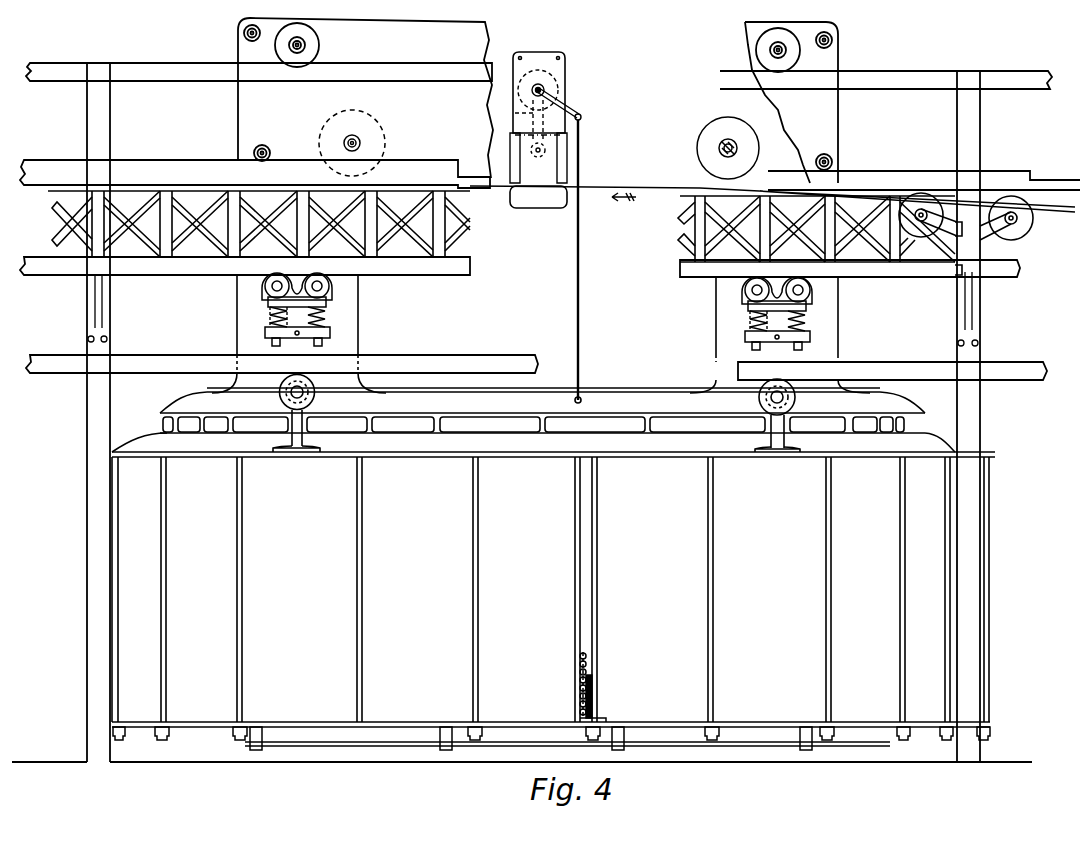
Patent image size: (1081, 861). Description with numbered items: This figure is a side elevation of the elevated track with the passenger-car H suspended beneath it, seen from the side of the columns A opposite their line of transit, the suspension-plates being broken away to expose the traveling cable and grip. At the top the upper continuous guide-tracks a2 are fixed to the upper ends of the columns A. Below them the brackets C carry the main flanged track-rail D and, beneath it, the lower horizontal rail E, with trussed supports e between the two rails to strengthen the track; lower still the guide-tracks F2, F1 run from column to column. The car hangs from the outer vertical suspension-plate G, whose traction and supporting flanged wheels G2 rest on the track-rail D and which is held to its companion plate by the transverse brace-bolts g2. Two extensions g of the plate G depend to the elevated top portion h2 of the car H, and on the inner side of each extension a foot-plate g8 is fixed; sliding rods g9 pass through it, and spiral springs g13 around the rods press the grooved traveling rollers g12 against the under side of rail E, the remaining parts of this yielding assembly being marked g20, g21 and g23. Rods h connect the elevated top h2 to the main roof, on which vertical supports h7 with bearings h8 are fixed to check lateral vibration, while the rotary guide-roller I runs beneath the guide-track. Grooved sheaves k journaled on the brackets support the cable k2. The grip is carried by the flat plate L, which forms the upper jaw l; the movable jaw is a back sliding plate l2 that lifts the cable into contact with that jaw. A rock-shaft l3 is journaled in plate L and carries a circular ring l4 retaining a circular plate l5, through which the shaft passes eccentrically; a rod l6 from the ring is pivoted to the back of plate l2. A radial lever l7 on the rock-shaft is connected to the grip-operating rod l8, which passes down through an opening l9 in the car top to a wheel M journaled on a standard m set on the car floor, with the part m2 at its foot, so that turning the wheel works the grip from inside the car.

The upper continuous guide-track a2 is at (193, 63).
The main flanged track-rail D is at (160, 150).
The lower horizontal rail E is at (924, 277).
The trussed support e is at (501, 226).
The lower beam F2 is at (178, 355).
The guide-track F1 is at (918, 362).
The stationary column A is at (980, 418).
The bracket C is at (980, 310).
The outer suspension-plate G is at (538, 100).
The traction and supporting flanged wheel G2 is at (722, 120).
The grooved sheave k is at (973, 234).
The cable k2 is at (772, 189).
The flat plate L is at (548, 92).
The upper jaw l is at (538, 158).
The back sliding plate l2 is at (498, 146).
The rock-shaft l3 is at (536, 90).
The circular ring l4 is at (543, 85).
The circular plate l5 is at (556, 82).
The rod l6 is at (514, 120).
The radial lever l7 is at (580, 112).
The grip-operating rod l8 is at (580, 306).
The opening l9 is at (582, 400).
The extension of plate G g is at (548, 318).
The transverse brace-bolt g2 is at (693, 392).
The foot-plate g8 is at (332, 334).
The sliding rod g9 is at (802, 348).
The grooved traveling roller g12 is at (812, 290).
The spiral spring g13 is at (740, 306).
The spring g20 is at (574, 314).
The spring g21 is at (503, 313).
The spring rod g23 is at (270, 322).
The rotary guide-roller I is at (760, 403).
The rod h is at (878, 392).
The elevated top portion h2 is at (862, 592).
The vertical support h7 is at (786, 432).
The bearing h8 is at (788, 412).
The suspended passenger-car H is at (553, 589).
The wheel M is at (590, 665).
The standard m is at (594, 706).
The motor foot m2 is at (580, 712).